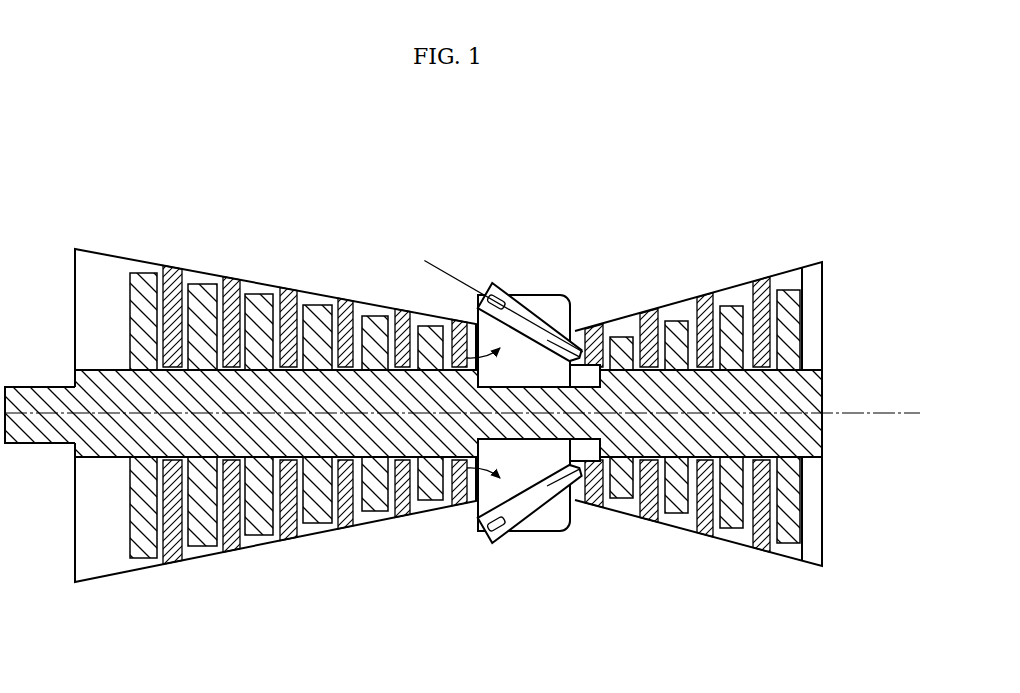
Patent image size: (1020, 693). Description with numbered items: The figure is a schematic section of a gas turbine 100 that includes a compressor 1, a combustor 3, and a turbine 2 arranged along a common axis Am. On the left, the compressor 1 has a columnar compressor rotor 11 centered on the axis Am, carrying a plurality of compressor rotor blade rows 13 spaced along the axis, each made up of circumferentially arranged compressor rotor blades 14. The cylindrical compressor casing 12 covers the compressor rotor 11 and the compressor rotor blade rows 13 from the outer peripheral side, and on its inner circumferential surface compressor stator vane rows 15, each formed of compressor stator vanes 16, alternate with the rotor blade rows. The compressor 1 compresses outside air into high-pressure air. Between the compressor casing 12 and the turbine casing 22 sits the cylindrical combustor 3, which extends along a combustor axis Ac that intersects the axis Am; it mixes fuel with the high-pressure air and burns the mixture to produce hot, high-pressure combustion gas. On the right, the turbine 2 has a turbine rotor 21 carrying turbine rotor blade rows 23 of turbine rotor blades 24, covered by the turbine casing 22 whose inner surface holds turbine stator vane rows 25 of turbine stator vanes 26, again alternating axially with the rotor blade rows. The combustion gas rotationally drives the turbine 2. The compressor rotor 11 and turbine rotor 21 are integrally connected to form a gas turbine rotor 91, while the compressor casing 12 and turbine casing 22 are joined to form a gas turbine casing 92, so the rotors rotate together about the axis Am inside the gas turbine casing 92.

The gas turbine 100 is at (468, 380).
The compressor 1 is at (275, 421).
The turbine 2 is at (701, 421).
The combustor 3 is at (508, 369).
The compressor rotor 11 is at (418, 436).
The compressor casing 12 is at (263, 285).
The compressor rotor blade rows 13 is at (141, 552).
The compressor rotor blades 14 is at (275, 476).
The compressor stator vane rows 15 is at (231, 548).
The compressor stator vanes 16 is at (315, 461).
The turbine rotor 21 is at (663, 442).
The turbine casing 22 is at (668, 303).
The turbine rotor blade rows 23 is at (732, 520).
The turbine rotor blades 24 is at (712, 481).
The turbine stator vane rows 25 is at (648, 521).
The turbine stator vanes 26 is at (677, 454).
The gas turbine rotor 91 is at (413, 518).
The gas turbine casing 92 is at (451, 421).
The combustor axis Ac is at (457, 280).
The axis Am is at (902, 412).